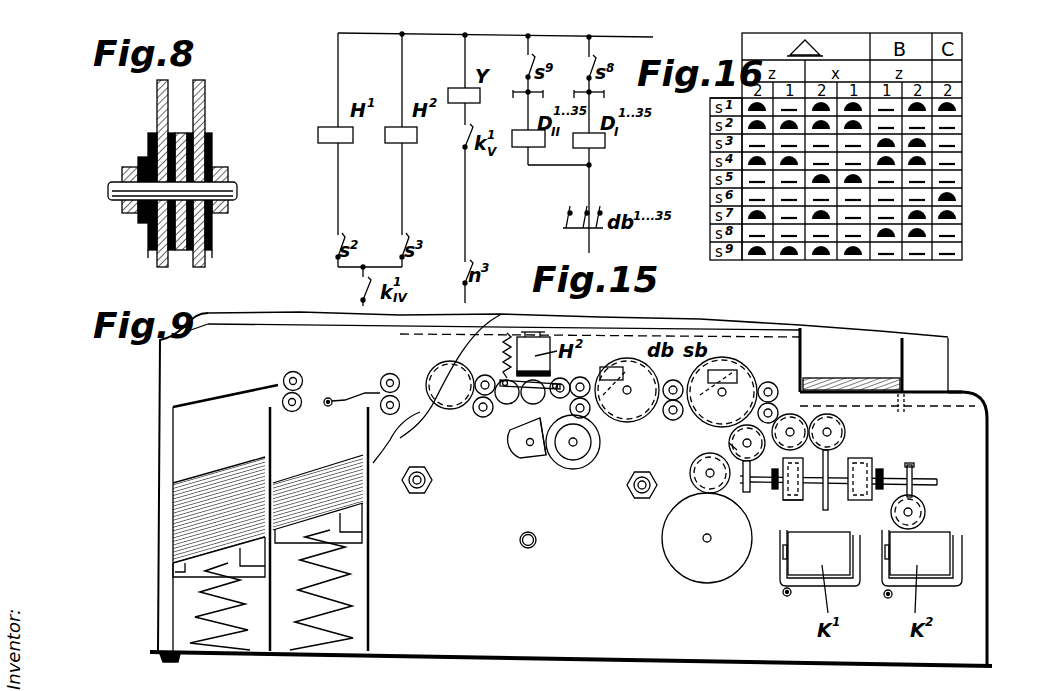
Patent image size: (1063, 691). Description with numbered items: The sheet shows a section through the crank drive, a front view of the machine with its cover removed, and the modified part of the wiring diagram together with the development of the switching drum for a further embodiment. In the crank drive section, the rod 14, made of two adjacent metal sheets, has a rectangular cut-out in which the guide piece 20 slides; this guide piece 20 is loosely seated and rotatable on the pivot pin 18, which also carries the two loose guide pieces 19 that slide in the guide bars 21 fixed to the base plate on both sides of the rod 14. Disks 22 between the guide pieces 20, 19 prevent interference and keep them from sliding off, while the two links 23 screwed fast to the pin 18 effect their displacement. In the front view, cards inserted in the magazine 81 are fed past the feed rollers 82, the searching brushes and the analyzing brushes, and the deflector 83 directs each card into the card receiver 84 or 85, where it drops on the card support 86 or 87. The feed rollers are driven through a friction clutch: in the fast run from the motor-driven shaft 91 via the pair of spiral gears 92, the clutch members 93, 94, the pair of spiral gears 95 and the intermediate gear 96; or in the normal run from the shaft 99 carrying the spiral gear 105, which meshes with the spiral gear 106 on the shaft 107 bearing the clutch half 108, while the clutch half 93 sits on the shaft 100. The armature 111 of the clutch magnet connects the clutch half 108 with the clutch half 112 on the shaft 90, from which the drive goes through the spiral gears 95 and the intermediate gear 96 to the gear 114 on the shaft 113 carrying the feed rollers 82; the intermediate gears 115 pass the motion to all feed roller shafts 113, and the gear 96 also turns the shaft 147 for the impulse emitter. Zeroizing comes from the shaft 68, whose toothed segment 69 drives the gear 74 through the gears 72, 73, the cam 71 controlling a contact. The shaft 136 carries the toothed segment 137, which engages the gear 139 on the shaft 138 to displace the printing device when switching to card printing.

In FIG. 8, the rod 14 is at (205, 238).
In FIG. 8, the pivot pin 18 is at (122, 190).
In FIG. 8, the guide pieces 19 is at (138, 222).
In FIG. 8, the guide piece 20 is at (150, 157).
In FIG. 8, the guide bars 21 is at (165, 80).
In FIG. 8, the disks 22 is at (168, 133).
In FIG. 8, the links 23 is at (205, 258).
In FIG. 9, the shaft 68 is at (522, 467).
In FIG. 9, the toothed segment 69 is at (530, 449).
In FIG. 9, the cam 71 is at (527, 436).
In FIG. 9, the gear 72 is at (558, 464).
In FIG. 9, the gear 73 is at (587, 461).
In FIG. 9, the gear 74 is at (530, 414).
In FIG. 9, the magazine 81 is at (949, 353).
In FIG. 9, the feed rollers 82 is at (286, 396).
In FIG. 9, the deflector 83 is at (418, 388).
In FIG. 9, the card receiver 84 is at (288, 450).
In FIG. 9, the card receiver 85 is at (183, 448).
In FIG. 9, the card support 86 is at (348, 530).
In FIG. 9, the card support 87 is at (175, 572).
In FIG. 9, the shaft 90 is at (858, 584).
In FIG. 9, the shaft 91 is at (913, 518).
In FIG. 9, the pair of spiral gears 92 is at (913, 472).
In FIG. 9, the clutch member 93 is at (883, 468).
In FIG. 9, the clutch member 94 is at (873, 463).
In FIG. 9, the pair of spiral gears 95 is at (828, 466).
In FIG. 9, the intermediate gear 96 is at (828, 430).
In FIG. 9, the shaft 99 is at (729, 444).
In FIG. 9, the shaft 100 is at (897, 499).
In FIG. 9, the spiral gear 105 is at (743, 444).
In FIG. 9, the spiral gear 106 is at (745, 491).
In FIG. 9, the shaft 107 is at (771, 486).
In FIG. 9, the clutch half 108 is at (790, 501).
In FIG. 9, the armature 111 is at (785, 594).
In FIG. 9, the clutch half 112 is at (812, 491).
In FIG. 9, the shaft 113 is at (792, 428).
In FIG. 9, the gear 114 is at (798, 390).
In FIG. 9, the intermediate gears 115 is at (458, 378).
In FIG. 9, the shaft 136 is at (704, 541).
In FIG. 9, the toothed segment 137 is at (683, 541).
In FIG. 9, the shaft 138 is at (693, 492).
In FIG. 9, the gear 139 is at (697, 474).
In FIG. 9, the shaft 147 is at (905, 381).